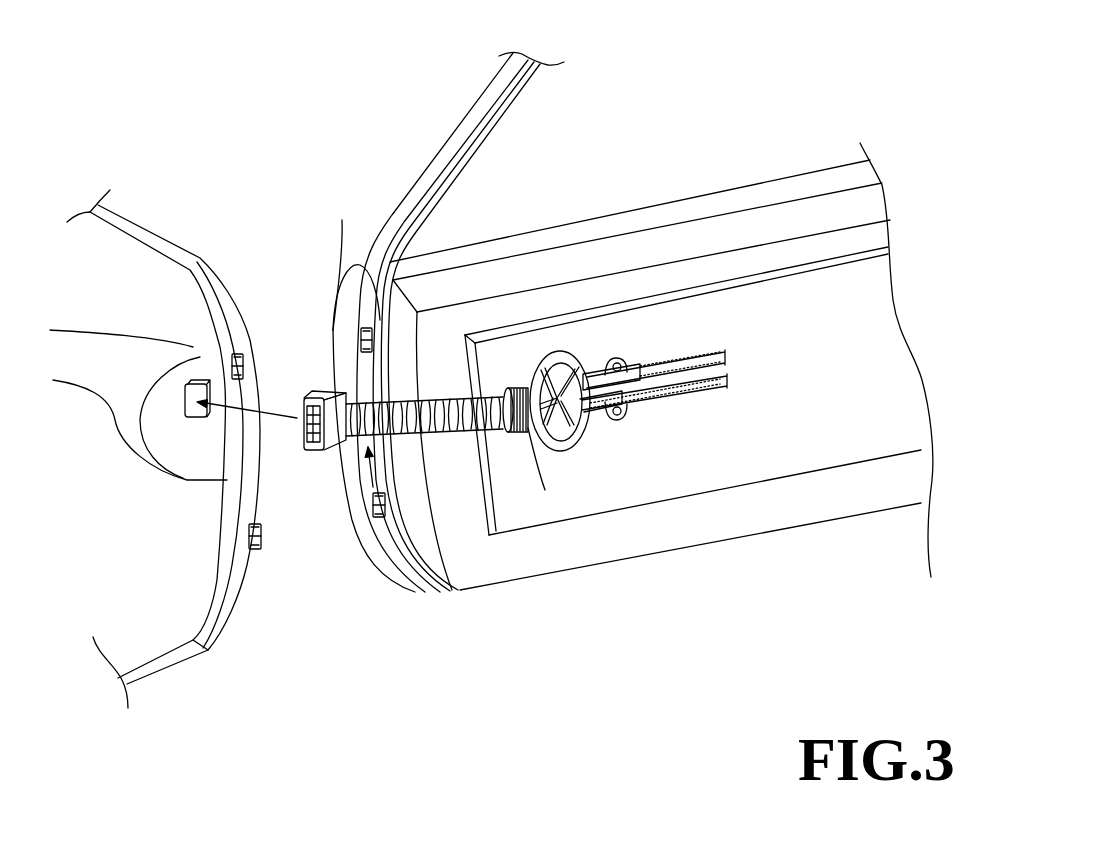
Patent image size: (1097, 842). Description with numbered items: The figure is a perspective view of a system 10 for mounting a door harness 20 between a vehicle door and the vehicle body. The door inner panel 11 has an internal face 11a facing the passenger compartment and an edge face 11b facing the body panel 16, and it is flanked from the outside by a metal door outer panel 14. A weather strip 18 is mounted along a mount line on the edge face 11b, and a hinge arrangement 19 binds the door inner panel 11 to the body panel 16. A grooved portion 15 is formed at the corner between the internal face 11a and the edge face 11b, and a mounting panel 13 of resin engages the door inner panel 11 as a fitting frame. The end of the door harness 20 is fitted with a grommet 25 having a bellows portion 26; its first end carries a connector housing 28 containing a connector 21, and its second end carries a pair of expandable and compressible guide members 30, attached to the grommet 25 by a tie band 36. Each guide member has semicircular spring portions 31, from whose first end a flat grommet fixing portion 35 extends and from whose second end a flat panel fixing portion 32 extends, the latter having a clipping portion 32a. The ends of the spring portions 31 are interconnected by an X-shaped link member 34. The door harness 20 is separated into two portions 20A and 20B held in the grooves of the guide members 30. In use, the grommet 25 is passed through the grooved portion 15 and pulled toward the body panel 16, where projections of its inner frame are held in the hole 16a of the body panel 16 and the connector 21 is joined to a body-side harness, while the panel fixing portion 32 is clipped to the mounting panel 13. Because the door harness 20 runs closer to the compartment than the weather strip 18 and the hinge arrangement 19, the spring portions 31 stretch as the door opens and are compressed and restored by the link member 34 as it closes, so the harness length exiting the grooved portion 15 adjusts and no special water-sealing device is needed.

The system for mounting a door harness 10 is at (287, 168).
The door inner panel 11 is at (655, 427).
The internal face 11a is at (491, 537).
The edge face 11b is at (460, 590).
The mounting panel 13 is at (763, 463).
The door outer panel 14 is at (342, 220).
The grooved portion 15 is at (412, 593).
The body panel 16 is at (110, 350).
The hole 16a is at (195, 383).
The weather strip 18 is at (366, 262).
The hinge arrangement 19 is at (355, 338).
The door harness 20 is at (716, 371).
The first door harness portion 20A is at (702, 352).
The second door harness portion 20B is at (687, 404).
The connector 21 is at (308, 450).
The grommet 25 is at (370, 480).
The bellows portion 26 is at (437, 410).
The connector housing 28 is at (347, 448).
The expandable and compressible guide members 30 is at (547, 343).
The spring portions 31 is at (611, 358).
The panel fixing portion 32 is at (640, 400).
The clipping portion 32a is at (614, 362).
The link member 34 is at (582, 447).
The grommet fixing portion 35 is at (542, 447).
The tie band 36 is at (542, 497).